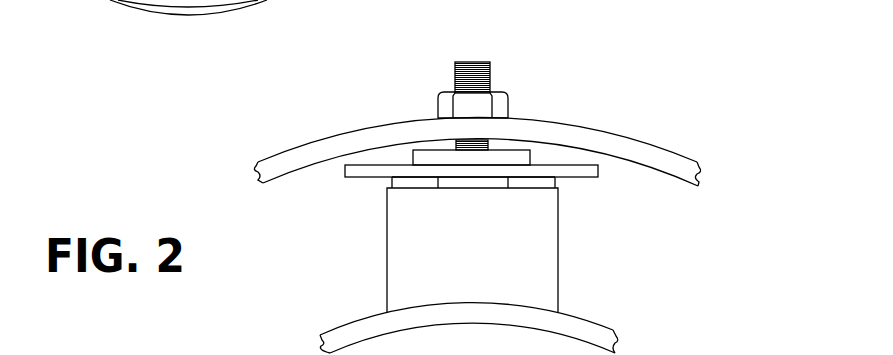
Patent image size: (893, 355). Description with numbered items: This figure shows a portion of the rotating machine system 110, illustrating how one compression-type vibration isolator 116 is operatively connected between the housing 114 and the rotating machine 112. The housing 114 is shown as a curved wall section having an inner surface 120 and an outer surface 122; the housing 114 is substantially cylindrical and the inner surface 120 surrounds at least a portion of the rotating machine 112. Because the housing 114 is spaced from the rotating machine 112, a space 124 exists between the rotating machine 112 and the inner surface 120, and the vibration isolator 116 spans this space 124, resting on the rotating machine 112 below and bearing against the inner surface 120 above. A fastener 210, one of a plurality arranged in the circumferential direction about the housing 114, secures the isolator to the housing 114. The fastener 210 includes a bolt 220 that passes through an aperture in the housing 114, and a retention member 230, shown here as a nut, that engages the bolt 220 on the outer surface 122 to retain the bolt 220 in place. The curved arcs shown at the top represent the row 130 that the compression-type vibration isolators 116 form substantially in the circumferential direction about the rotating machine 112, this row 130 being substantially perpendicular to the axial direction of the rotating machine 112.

The rotating machine system 110 is at (716, 98).
The rotating machine 112 is at (605, 327).
The housing 114 is at (493, 173).
The vibration isolator 116 is at (532, 250).
The inner surface 120 is at (304, 169).
The outer surface 122 is at (292, 147).
The space 124 is at (347, 267).
The row 130 is at (363, 0).
The fastener 210 is at (493, 45).
The bolt 220 is at (492, 76).
The retention member 230 is at (497, 108).